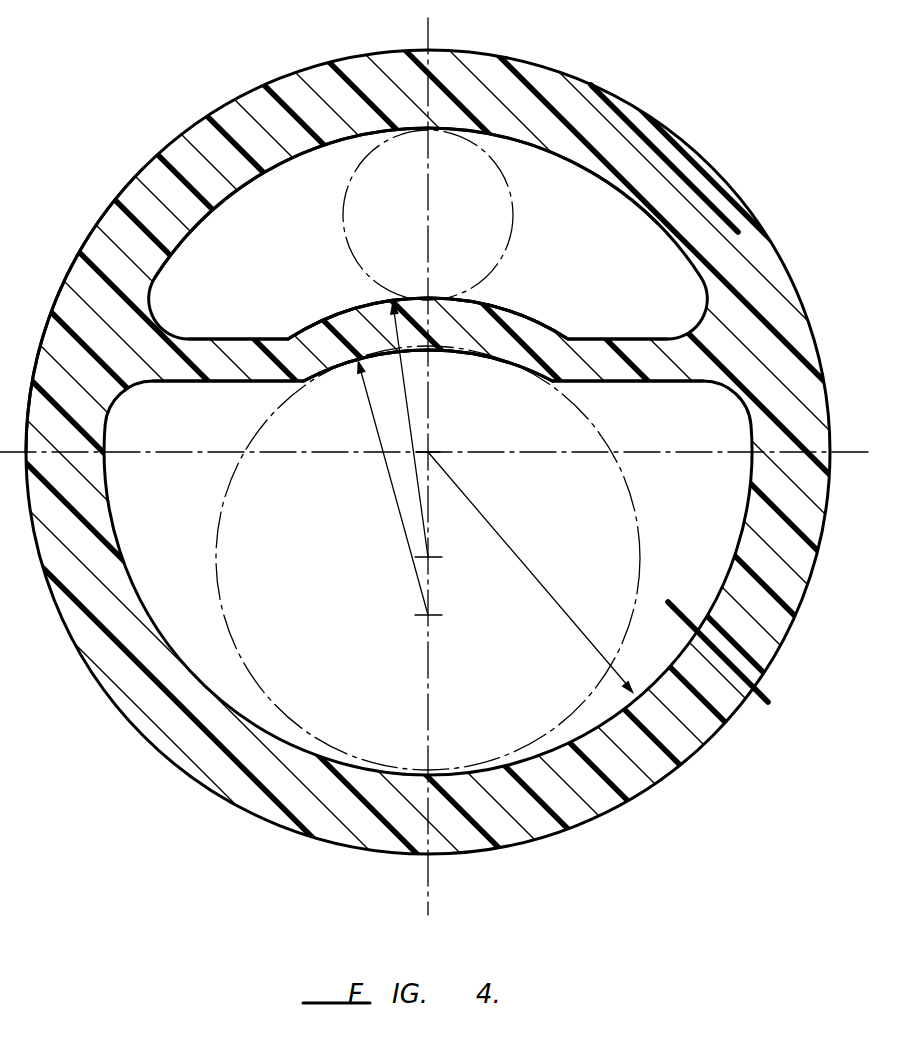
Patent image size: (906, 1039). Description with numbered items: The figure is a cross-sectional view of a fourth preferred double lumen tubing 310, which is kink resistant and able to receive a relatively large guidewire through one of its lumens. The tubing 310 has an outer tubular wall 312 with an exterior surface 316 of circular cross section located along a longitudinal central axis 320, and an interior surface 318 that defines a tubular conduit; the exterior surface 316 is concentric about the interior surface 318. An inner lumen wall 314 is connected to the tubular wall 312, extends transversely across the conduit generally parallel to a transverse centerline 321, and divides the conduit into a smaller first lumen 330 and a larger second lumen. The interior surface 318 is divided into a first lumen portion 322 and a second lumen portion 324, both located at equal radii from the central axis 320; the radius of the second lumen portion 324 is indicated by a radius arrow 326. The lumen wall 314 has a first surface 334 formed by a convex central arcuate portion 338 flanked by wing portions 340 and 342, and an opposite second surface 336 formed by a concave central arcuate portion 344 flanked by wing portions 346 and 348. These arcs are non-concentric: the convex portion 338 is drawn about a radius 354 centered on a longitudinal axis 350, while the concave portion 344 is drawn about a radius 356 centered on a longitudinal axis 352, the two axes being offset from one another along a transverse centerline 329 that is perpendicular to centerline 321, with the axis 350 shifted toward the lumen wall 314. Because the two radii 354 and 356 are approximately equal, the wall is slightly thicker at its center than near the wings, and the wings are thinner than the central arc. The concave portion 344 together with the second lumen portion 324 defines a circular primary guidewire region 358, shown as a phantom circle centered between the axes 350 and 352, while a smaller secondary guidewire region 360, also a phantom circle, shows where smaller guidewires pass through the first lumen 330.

The double lumen tubing 310 is at (207, 76).
The outer tubular wall 312 is at (428, 155).
The inner lumen wall 314 is at (428, 339).
The exterior surface 316 is at (152, 160).
The interior surface 318 is at (194, 236).
The longitudinal central axis 320 is at (432, 451).
The transverse centerline 321 is at (850, 449).
The first lumen portion 322 is at (657, 213).
The second lumen portion 324 is at (723, 612).
The radius of lower bore 326 is at (562, 574).
The transverse centerline 329 is at (432, 876).
The first lumen 330 is at (428, 233).
The first surface 334 is at (508, 308).
The second surface 336 is at (513, 366).
The convex central arcuate portion 338 is at (344, 308).
The wing portion 340 is at (216, 338).
The wing portion 342 is at (621, 338).
The concave central arcuate portion 344 is at (352, 367).
The wing portion 346 is at (207, 382).
The wing portion 348 is at (655, 382).
The longitudinal axis 350 is at (430, 559).
The longitudinal axis 352 is at (425, 620).
The radius 354 is at (406, 371).
The radius 356 is at (392, 496).
The primary guidewire region 358 is at (215, 563).
The secondary guidewire region 360 is at (514, 200).